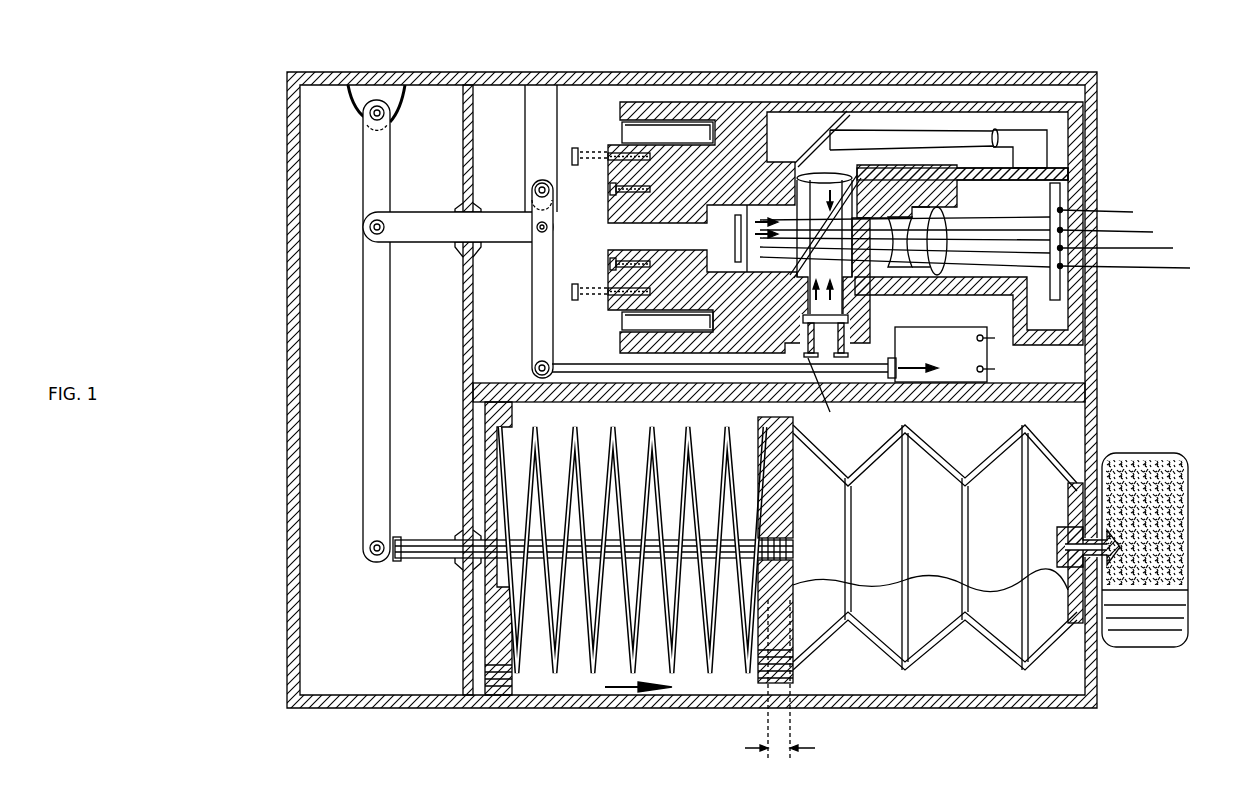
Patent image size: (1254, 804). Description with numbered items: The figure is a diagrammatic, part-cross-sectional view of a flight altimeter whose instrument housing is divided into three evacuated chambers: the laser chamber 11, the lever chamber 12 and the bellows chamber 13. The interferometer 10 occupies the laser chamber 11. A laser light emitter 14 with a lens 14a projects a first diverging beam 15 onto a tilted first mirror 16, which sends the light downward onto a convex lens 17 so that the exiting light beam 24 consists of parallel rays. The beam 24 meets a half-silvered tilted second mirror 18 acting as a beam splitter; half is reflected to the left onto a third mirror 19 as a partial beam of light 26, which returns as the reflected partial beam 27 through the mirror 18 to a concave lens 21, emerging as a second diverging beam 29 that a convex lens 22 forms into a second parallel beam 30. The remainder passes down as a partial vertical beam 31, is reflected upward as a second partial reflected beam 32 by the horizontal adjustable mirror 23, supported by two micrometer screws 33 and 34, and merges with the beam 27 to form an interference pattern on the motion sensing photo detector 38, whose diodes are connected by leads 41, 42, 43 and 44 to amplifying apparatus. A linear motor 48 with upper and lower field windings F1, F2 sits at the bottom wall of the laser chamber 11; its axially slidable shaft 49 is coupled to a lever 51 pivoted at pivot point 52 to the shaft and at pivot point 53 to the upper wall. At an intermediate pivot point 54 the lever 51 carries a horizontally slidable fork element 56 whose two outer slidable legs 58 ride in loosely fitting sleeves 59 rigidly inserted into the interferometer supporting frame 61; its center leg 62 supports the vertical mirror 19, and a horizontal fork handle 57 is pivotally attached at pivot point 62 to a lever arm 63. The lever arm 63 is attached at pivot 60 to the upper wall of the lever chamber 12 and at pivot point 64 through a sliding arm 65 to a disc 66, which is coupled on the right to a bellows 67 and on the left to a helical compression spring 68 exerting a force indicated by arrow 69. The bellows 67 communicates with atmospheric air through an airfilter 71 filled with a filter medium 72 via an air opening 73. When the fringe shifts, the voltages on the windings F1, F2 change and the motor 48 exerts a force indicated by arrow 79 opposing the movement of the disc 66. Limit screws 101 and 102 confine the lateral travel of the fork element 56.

The interferometer 10 is at (813, 72).
The laser chamber 11 is at (514, 313).
The lever chamber 12 is at (337, 327).
The bellows chamber 13 is at (982, 683).
The laser light emitter 14 is at (982, 131).
The lens 14a is at (990, 136).
The first diverging beam 15 is at (925, 103).
The first mirror 16 is at (808, 138).
The convex lens 17 is at (830, 178).
The half-silvered tilted second mirror 18 is at (830, 258).
The third mirror 19 is at (735, 222).
The concave lens 21 is at (893, 270).
The convex lens 22 is at (950, 238).
The horizontal adjustable mirror 23 is at (857, 333).
The light beam 24 is at (808, 200).
The partial beam of light 26 is at (748, 276).
The reflected partial beam 27 is at (752, 222).
The second diverging beam 29 is at (907, 242).
The second parallel beam 30 is at (1017, 218).
The partial vertical beam 31 is at (805, 290).
The second partial reflected beam 32 is at (800, 305).
The micrometer screw 33 is at (849, 352).
The micrometer screw 34 is at (826, 394).
The motion sensing photo detector 38 is at (1126, 257).
The lead 41 is at (1111, 212).
The lead 42 is at (1120, 232).
The lead 43 is at (1129, 248).
The lead 44 is at (1138, 268).
The linear motor 48 is at (838, 340).
The axially slidable shaft 49 is at (572, 363).
The lever 51 is at (540, 322).
The pivot point 52 is at (536, 372).
The pivot point 53 is at (533, 192).
The intermediate pivot point 54 is at (537, 233).
The fork element 56 is at (813, 188).
The fork handle 57 is at (419, 213).
The outer slidable legs 58 is at (671, 139).
The sleeves 59 is at (700, 110).
The pivot 60 is at (362, 115).
The interferometer supporting frame 61 is at (628, 100).
The center leg / pivot point 62 is at (362, 226).
The lever arm 63 is at (370, 398).
The pivot point 64 is at (370, 560).
The sliding arm 65 is at (425, 560).
The disc 66 is at (795, 608).
The bellows 67 is at (872, 650).
The helical compression spring 68 is at (617, 445).
The arrow 69 is at (638, 674).
The airfilter 71 is at (1167, 573).
The filter medium 72 is at (1170, 517).
The air opening 73 is at (1075, 553).
The arrow 79 is at (789, 359).
The limit screw 101 is at (574, 148).
The limit screw 102 is at (635, 192).
The upper field winding F1 is at (992, 332).
The lower field winding F2 is at (998, 369).